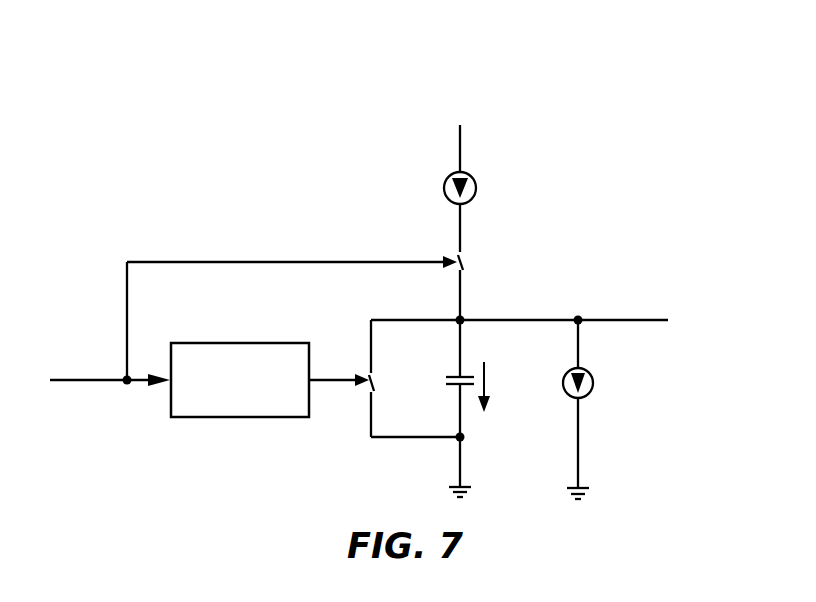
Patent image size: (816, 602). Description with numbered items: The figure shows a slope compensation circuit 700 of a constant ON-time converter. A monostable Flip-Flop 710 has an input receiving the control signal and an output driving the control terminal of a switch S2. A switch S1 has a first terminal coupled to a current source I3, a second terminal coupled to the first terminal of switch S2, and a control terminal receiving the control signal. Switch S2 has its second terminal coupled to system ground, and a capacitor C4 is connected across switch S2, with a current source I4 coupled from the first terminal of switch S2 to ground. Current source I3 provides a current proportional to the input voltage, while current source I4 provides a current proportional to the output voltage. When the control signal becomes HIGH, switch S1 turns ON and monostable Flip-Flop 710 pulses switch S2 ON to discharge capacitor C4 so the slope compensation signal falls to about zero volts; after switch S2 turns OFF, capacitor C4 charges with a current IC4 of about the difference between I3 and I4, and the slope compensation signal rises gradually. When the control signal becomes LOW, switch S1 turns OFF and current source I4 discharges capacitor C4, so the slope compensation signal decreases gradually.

The slope compensation circuit 700 is at (617, 98).
The monostable Flip-Flop 710 is at (198, 418).
The current source I3 is at (481, 188).
The current source I4 is at (595, 404).
The switch S1 is at (312, 285).
The switch S2 is at (384, 378).
The capacitor C4 is at (444, 378).
The current flowing through capacitor C4 IC4 is at (507, 387).